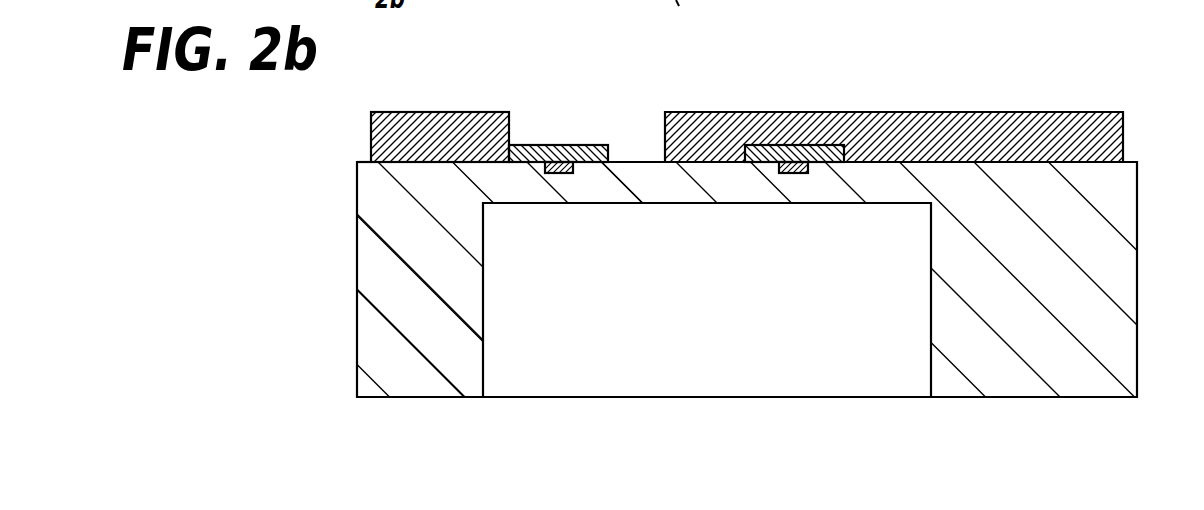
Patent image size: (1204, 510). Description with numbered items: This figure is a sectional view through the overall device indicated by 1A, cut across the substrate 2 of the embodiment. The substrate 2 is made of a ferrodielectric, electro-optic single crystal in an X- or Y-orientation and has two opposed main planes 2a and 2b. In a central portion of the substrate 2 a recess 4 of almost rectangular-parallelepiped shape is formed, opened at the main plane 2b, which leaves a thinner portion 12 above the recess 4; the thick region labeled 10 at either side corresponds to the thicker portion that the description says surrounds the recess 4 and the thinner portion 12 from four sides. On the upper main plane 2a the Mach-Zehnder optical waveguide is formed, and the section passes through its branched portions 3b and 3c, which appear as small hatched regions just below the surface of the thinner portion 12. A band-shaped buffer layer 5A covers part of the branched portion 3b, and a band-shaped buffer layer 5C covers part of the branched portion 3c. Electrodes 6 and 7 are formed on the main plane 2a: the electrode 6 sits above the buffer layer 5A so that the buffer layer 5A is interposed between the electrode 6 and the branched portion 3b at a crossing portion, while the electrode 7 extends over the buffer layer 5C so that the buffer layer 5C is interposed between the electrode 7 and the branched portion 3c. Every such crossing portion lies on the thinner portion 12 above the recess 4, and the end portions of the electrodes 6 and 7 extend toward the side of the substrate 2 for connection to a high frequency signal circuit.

The piezoelectric device 1A is at (1043, 105).
The substrate 2 is at (410, 178).
The main plane 2a is at (357, 163).
The main plane 2b is at (422, 398).
The branched portion 3b is at (570, 143).
The branched portion 3c is at (803, 163).
The recess 4 is at (695, 205).
The buffer layer 5A is at (528, 155).
The buffer layer 5C is at (765, 152).
The electrode 6 is at (468, 125).
The electrode 7 is at (923, 120).
The side wall 10 is at (395, 286).
The thinner portion 12 is at (641, 177).